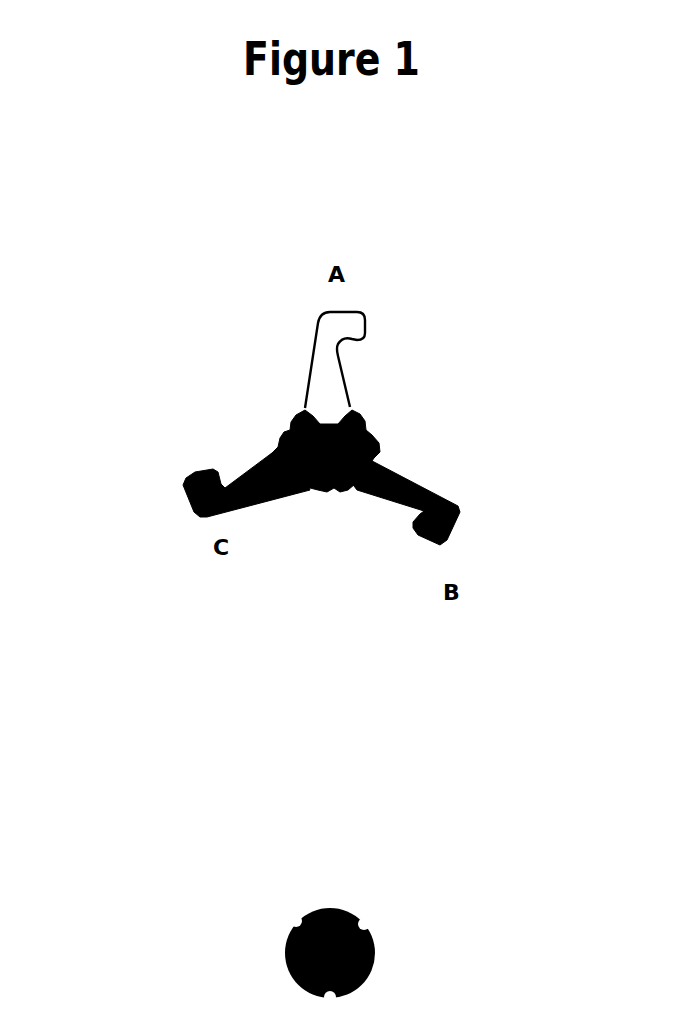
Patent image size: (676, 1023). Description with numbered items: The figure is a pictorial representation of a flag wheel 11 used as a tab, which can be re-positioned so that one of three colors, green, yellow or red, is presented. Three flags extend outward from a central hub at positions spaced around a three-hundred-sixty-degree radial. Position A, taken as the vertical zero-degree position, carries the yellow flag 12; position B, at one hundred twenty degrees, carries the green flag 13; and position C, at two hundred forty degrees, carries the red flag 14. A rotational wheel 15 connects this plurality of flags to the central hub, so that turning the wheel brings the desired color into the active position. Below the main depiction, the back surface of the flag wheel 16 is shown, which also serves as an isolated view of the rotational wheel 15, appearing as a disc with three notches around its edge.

The flag wheel 11 is at (337, 469).
The yellow flag 12 is at (396, 327).
The green flag 13 is at (381, 523).
The red flag 14 is at (155, 500).
The rotational wheel 15 is at (252, 428).
The flag wheel back surface 16 is at (411, 958).